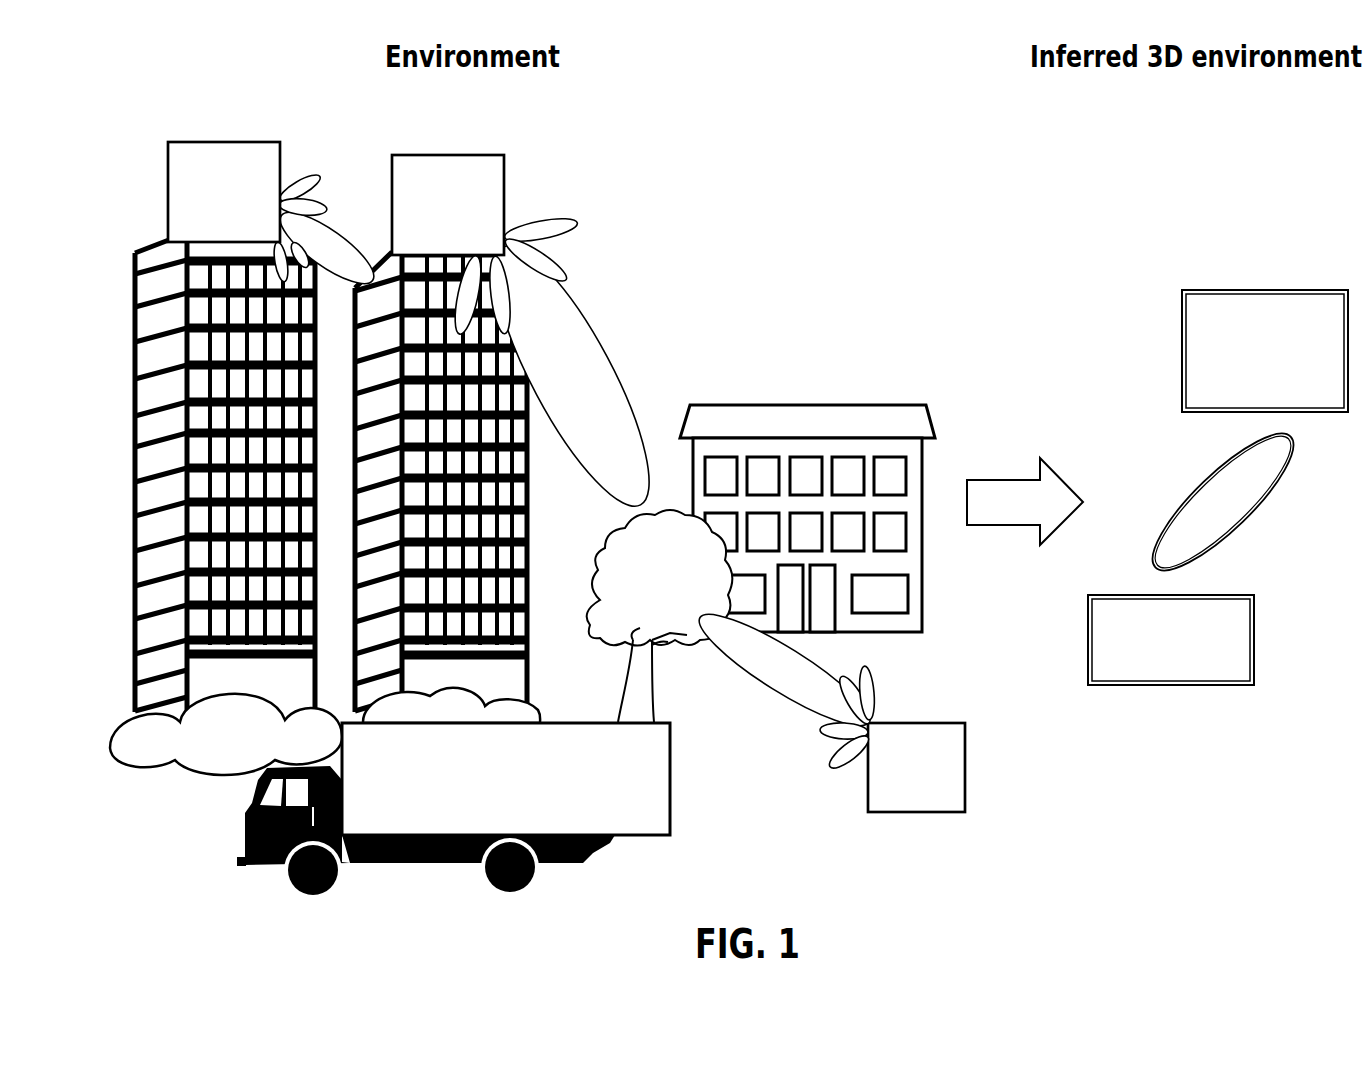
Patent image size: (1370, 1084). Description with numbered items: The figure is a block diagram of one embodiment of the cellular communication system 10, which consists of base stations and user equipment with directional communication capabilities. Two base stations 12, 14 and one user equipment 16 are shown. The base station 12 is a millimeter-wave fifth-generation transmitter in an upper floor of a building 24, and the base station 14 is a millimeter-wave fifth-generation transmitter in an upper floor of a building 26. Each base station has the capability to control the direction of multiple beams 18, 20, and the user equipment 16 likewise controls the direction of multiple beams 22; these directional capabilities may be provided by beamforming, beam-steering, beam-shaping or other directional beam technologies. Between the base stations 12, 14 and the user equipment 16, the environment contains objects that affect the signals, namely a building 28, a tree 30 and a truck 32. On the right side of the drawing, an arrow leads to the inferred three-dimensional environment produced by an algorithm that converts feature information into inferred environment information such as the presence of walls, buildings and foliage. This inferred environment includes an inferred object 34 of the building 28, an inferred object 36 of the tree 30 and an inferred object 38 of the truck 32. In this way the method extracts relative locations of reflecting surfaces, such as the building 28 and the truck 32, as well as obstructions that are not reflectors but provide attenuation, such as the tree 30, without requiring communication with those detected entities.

The environment / system 10 is at (935, 244).
The base station 12 is at (432, 236).
The base station 14 is at (208, 224).
The user equipment 16 is at (966, 765).
The beams 18 is at (577, 254).
The beams 20 is at (330, 183).
The beams 22 is at (887, 697).
The building 24 is at (528, 483).
The building 26 is at (160, 233).
The building 28 is at (932, 420).
The tree 30 is at (650, 685).
The truck 32 is at (500, 794).
The inferred object 34 is at (1249, 384).
The inferred object 36 is at (1200, 485).
The inferred object 38 is at (1155, 672).